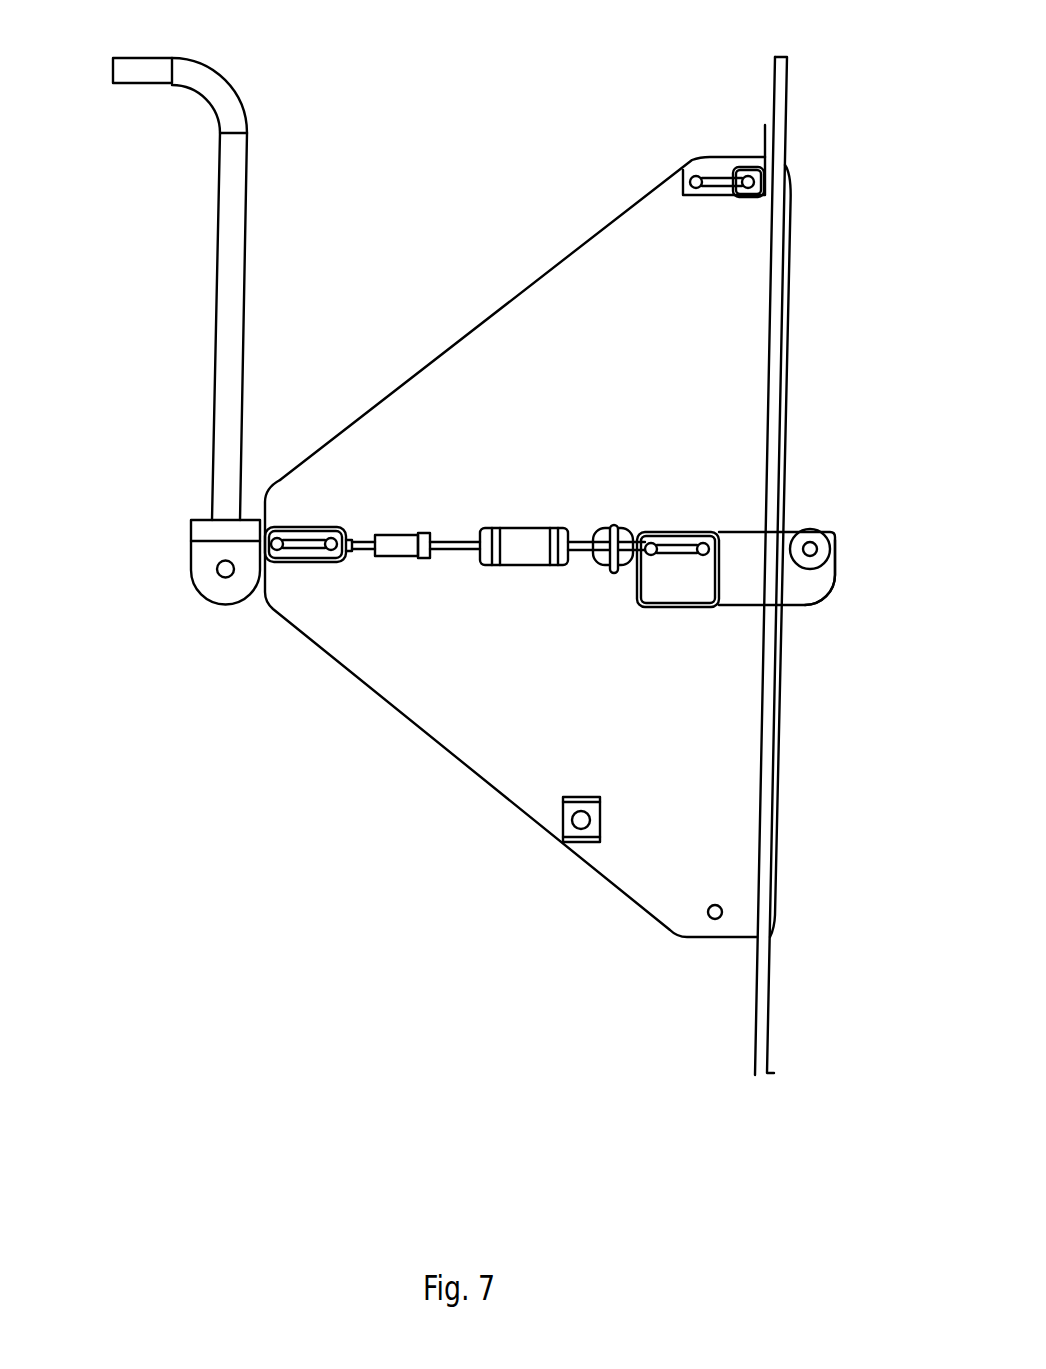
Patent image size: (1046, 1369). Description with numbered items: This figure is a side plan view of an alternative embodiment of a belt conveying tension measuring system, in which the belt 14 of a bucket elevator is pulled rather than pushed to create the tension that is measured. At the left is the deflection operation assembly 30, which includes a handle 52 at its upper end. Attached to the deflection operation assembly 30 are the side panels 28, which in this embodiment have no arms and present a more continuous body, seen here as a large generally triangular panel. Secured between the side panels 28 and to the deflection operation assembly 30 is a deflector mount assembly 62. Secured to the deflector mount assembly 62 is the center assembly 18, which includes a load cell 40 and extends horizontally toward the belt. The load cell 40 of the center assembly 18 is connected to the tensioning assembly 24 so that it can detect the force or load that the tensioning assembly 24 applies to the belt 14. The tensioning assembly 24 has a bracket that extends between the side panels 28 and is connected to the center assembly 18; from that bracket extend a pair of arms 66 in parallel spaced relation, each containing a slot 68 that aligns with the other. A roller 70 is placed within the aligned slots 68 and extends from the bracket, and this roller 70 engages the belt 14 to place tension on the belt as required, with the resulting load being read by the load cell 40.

The belt 14 is at (791, 187).
The center assembly 18 is at (534, 511).
The tensioning assembly 24 is at (795, 607).
The side panels 28 is at (521, 323).
The deflection operation assembly 30 is at (218, 273).
The load cell 40 is at (527, 566).
The handle 52 is at (142, 57).
The deflector mount assembly 62 is at (312, 526).
The arms 66 is at (836, 548).
The slot 68 is at (828, 537).
The roller 70 is at (810, 541).